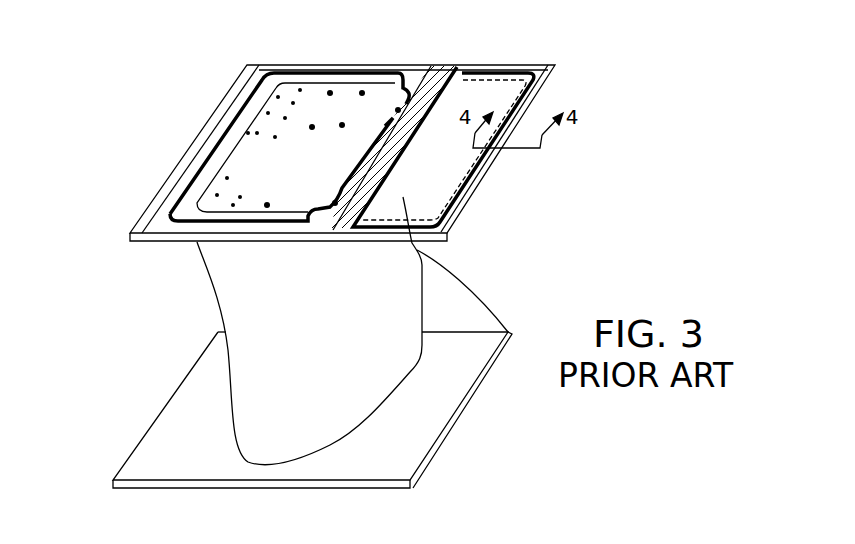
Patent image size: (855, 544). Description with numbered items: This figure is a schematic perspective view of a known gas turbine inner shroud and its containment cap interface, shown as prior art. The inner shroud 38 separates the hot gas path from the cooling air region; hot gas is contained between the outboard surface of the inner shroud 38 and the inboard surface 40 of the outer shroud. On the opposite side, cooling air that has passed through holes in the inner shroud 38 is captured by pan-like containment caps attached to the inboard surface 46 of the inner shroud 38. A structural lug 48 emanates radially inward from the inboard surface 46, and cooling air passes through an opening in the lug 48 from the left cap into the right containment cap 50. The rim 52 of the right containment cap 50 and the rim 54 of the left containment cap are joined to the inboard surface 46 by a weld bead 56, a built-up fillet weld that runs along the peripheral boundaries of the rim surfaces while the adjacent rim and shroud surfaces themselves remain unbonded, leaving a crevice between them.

The inner shroud 38 is at (495, 165).
The inboard surface of the outer shroud 40 is at (227, 455).
The inboard surface of the inner shroud 46 is at (157, 217).
The structural lug 48 is at (250, 158).
The right containment cap 50 is at (508, 333).
The rim of the right containment cap 52 is at (388, 232).
The rim of the left containment cap 54 is at (277, 232).
The weld bead 56 is at (197, 174).